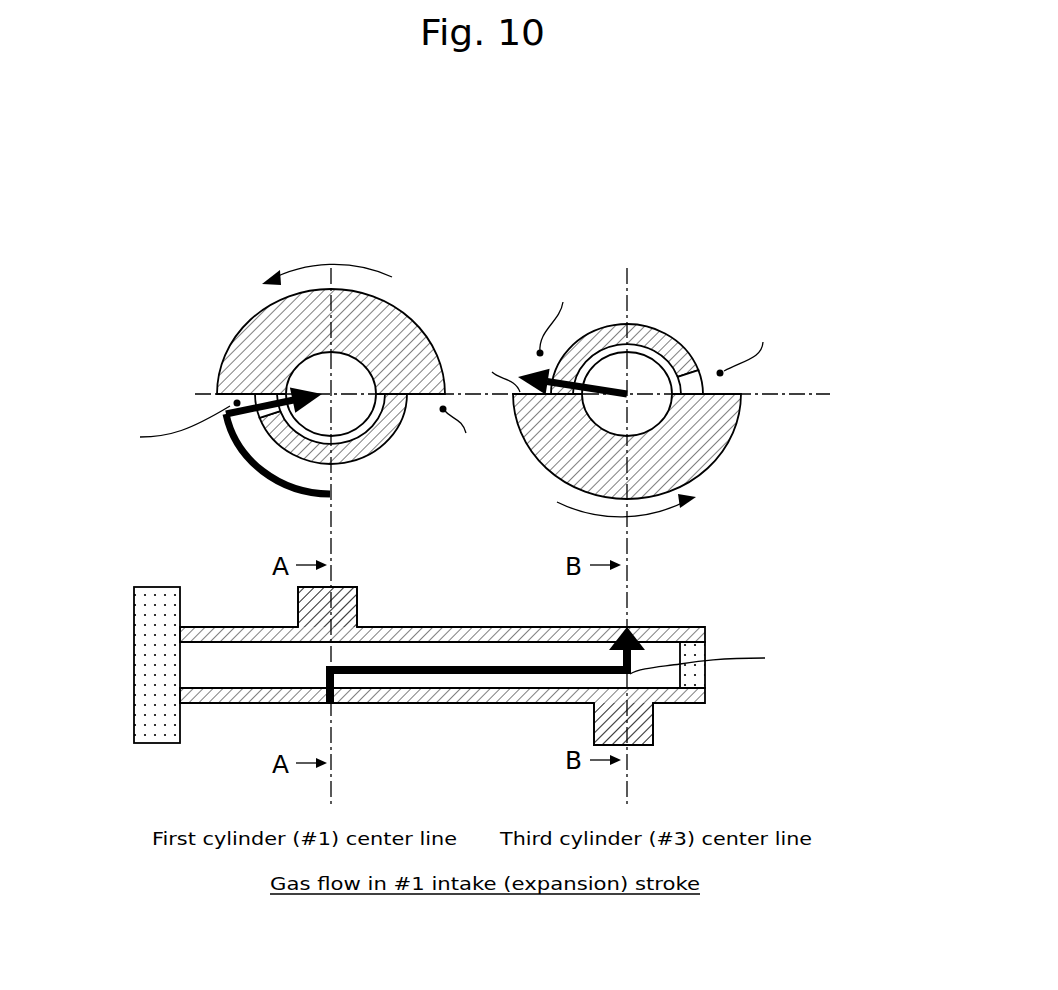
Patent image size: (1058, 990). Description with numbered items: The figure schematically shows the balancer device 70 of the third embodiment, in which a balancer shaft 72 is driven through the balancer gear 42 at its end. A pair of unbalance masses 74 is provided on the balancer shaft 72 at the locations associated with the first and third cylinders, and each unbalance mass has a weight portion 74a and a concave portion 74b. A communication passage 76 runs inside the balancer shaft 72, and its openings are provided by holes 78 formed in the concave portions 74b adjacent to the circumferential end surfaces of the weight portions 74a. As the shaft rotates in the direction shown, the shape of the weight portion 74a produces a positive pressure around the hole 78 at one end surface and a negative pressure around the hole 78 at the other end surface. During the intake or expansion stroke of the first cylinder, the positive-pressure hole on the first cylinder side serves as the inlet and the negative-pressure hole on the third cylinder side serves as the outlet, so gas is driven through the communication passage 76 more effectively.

The unbalance masses 74 is at (630, 193).
The weight portion 74a is at (278, 350).
The concave portion 74b is at (353, 438).
The holes 78 is at (485, 323).
The balancer device 70 is at (455, 640).
The balancer shaft 72 is at (212, 630).
The balancer gear 42 is at (152, 675).
The communication passage 76 is at (513, 682).